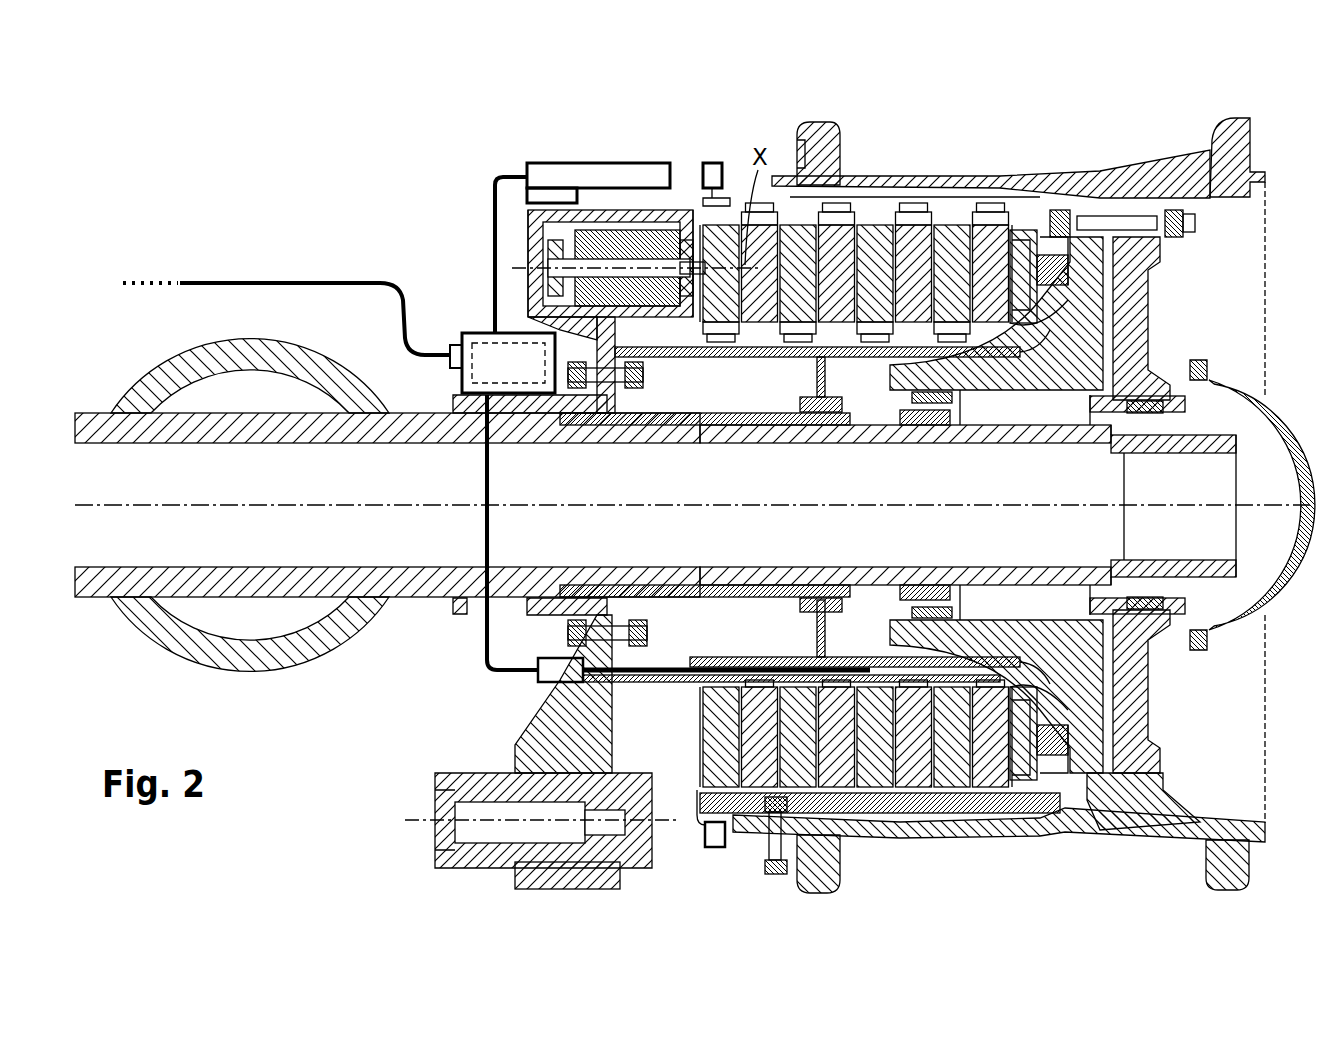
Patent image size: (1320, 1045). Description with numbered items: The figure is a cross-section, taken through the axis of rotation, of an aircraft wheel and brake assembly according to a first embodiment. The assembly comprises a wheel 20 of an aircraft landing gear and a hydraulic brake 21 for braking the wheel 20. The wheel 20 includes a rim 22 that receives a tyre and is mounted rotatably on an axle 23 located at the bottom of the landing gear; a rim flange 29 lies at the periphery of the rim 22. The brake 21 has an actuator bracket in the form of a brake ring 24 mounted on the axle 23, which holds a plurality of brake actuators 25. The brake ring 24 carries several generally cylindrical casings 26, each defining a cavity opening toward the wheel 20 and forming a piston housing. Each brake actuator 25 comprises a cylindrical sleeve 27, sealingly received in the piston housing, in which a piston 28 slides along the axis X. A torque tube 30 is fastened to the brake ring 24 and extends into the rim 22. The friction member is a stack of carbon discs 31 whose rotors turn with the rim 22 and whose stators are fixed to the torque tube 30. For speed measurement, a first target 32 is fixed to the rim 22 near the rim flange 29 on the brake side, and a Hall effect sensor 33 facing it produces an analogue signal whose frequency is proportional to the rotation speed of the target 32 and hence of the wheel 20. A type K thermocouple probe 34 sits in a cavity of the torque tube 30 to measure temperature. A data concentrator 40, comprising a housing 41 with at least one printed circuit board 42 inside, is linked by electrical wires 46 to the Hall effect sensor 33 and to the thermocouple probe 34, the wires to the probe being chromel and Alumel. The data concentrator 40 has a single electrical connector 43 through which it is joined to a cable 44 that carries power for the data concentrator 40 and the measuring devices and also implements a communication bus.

The wheel 20 is at (1244, 104).
The brake 21 is at (594, 897).
The rim 22 is at (1250, 125).
The axle 23 is at (850, 405).
The brake ring 24 is at (615, 330).
The brake actuator 25 is at (640, 230).
The casing 26 is at (520, 310).
The cylindrical sleeve 27 is at (688, 230).
The piston 28 is at (600, 235).
The rim flange 29 is at (800, 125).
The torque tube 30 is at (730, 660).
The stack of carbon discs 31 is at (940, 250).
The first target 32 is at (715, 165).
The Hall effect sensor 33 is at (560, 165).
The thermocouple probe 34 is at (660, 690).
The data concentrator 40 is at (462, 375).
The housing 41 is at (480, 333).
The printed circuit board 42 is at (510, 393).
The electrical connector 43 is at (450, 347).
The cable 44 is at (235, 280).
The electrical wires 46 is at (490, 178).